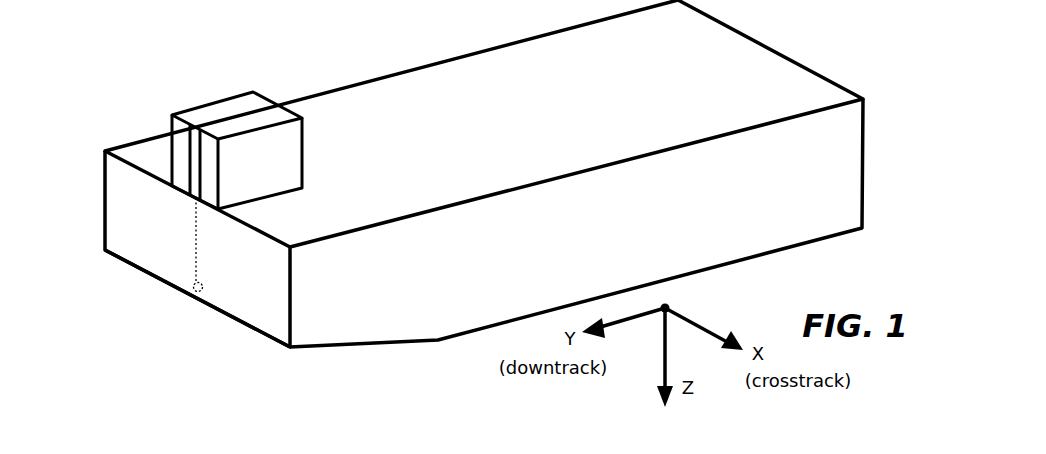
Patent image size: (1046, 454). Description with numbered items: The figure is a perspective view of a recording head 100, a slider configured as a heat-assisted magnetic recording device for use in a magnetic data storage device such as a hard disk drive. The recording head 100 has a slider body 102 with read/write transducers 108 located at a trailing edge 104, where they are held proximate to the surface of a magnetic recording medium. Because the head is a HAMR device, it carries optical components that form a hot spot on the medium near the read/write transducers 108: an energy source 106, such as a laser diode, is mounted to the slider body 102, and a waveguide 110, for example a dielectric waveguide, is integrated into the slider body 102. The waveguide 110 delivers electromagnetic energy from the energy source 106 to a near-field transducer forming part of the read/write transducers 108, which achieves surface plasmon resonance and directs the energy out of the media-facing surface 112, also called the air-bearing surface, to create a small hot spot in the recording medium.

The recording head 100 is at (469, 207).
The slider body 102 is at (427, 78).
The trailing edge 104 is at (105, 226).
The energy source 106 is at (196, 113).
The read/write transducers 108 is at (193, 318).
The waveguide 110 is at (195, 243).
The media-facing surface 112 is at (277, 345).